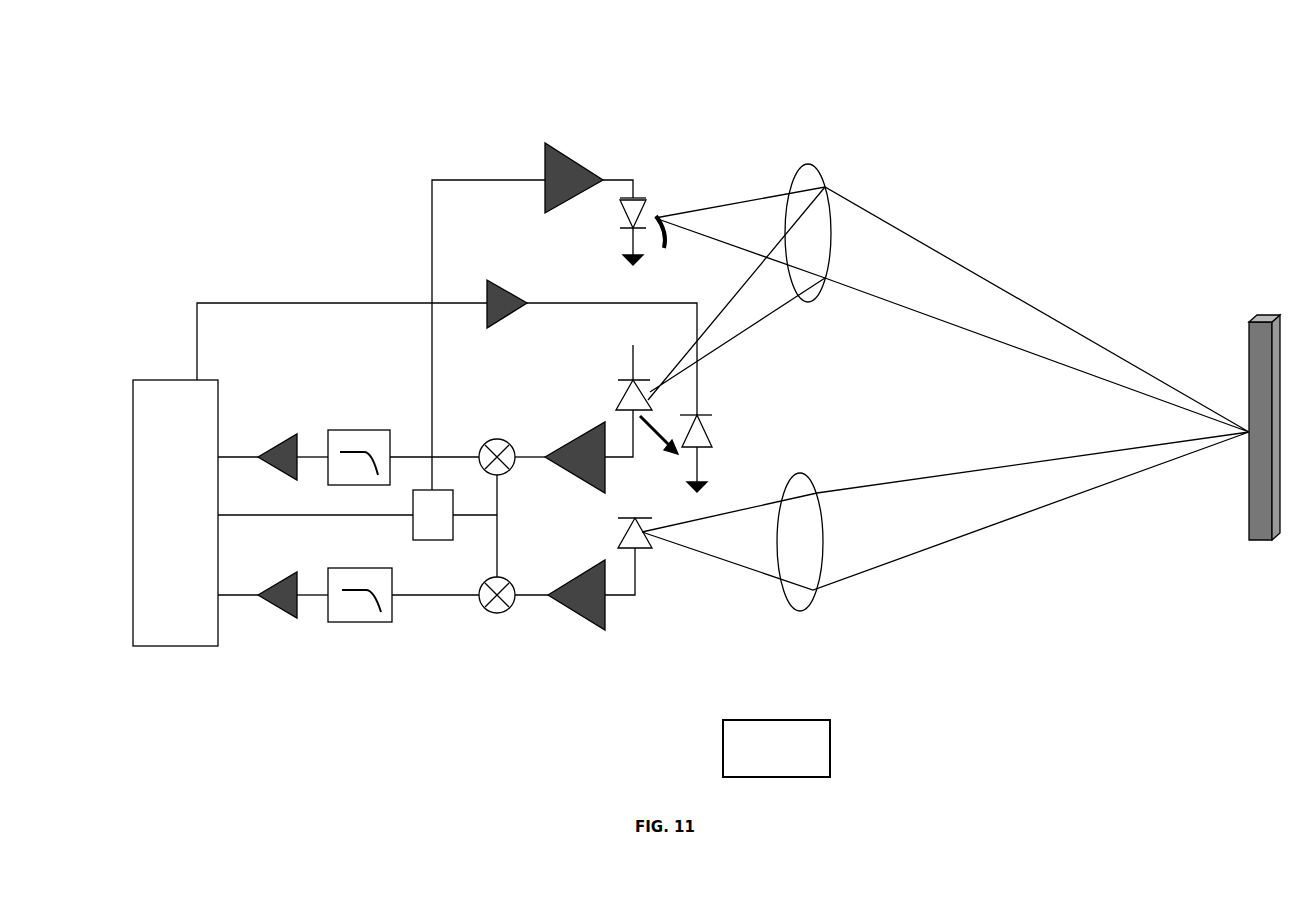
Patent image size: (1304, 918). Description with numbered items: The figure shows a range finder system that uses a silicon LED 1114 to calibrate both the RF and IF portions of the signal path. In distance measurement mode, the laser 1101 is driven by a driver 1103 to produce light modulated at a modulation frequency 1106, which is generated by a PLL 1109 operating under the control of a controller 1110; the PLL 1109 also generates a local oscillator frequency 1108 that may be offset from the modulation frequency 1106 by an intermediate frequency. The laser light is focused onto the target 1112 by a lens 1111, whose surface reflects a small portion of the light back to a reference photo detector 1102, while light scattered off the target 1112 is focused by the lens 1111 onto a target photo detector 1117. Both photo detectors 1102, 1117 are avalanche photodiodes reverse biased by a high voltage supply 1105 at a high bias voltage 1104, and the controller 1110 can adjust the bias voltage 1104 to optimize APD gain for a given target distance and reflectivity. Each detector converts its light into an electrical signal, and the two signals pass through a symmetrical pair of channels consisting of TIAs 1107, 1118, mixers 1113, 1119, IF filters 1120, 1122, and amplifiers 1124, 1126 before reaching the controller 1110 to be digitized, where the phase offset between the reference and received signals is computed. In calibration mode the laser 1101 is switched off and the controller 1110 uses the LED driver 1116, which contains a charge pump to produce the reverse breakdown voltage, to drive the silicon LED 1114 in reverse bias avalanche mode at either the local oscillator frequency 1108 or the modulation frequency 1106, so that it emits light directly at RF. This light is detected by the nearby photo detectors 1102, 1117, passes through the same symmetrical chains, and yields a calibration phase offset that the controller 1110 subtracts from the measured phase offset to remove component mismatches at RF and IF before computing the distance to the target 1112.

The laser 1101 is at (654, 183).
The reference photo detector 1102 is at (628, 399).
The driver 1103 is at (576, 153).
The high bias voltage 1104 is at (777, 718).
The high voltage supply 1105 is at (776, 748).
The modulation frequency 1106 is at (488, 321).
The TIA 1107 is at (570, 461).
The local oscillator frequency 1108 is at (475, 526).
The PLL 1109 is at (433, 515).
The controller 1110 is at (175, 513).
The lens 1111 is at (809, 548).
The target 1112 is at (1268, 414).
The mixer 1113 is at (498, 445).
The silicon LED 1114 is at (717, 453).
The LED driver 1116 is at (524, 294).
The target photo detector 1117 is at (617, 533).
The TIA 1118 is at (576, 606).
The mixer 1119 is at (499, 609).
The IF filter 1120 is at (359, 445).
The IF filter 1122 is at (360, 608).
The amplifier 1124 is at (270, 448).
The amplifier 1126 is at (276, 610).